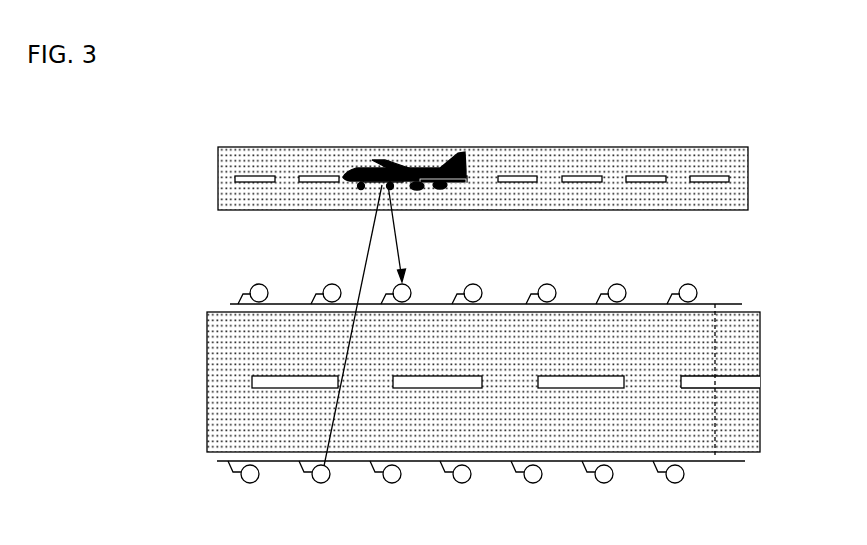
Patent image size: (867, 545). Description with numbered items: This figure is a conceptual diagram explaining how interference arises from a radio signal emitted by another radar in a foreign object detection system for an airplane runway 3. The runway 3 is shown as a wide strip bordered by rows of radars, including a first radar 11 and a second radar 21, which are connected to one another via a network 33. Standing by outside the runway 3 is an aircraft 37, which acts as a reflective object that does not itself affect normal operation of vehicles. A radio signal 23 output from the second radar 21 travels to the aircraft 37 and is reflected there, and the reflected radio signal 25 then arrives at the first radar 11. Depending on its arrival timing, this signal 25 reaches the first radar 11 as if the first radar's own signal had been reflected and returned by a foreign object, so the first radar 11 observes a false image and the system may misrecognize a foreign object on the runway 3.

The airplane runway 3 is at (695, 318).
The first radar 11 is at (408, 288).
The second radar 21 is at (318, 479).
The radio signal 23 is at (367, 255).
The reflected radio signal 25 is at (400, 252).
The network 33 is at (642, 303).
The aircraft 37 is at (350, 172).